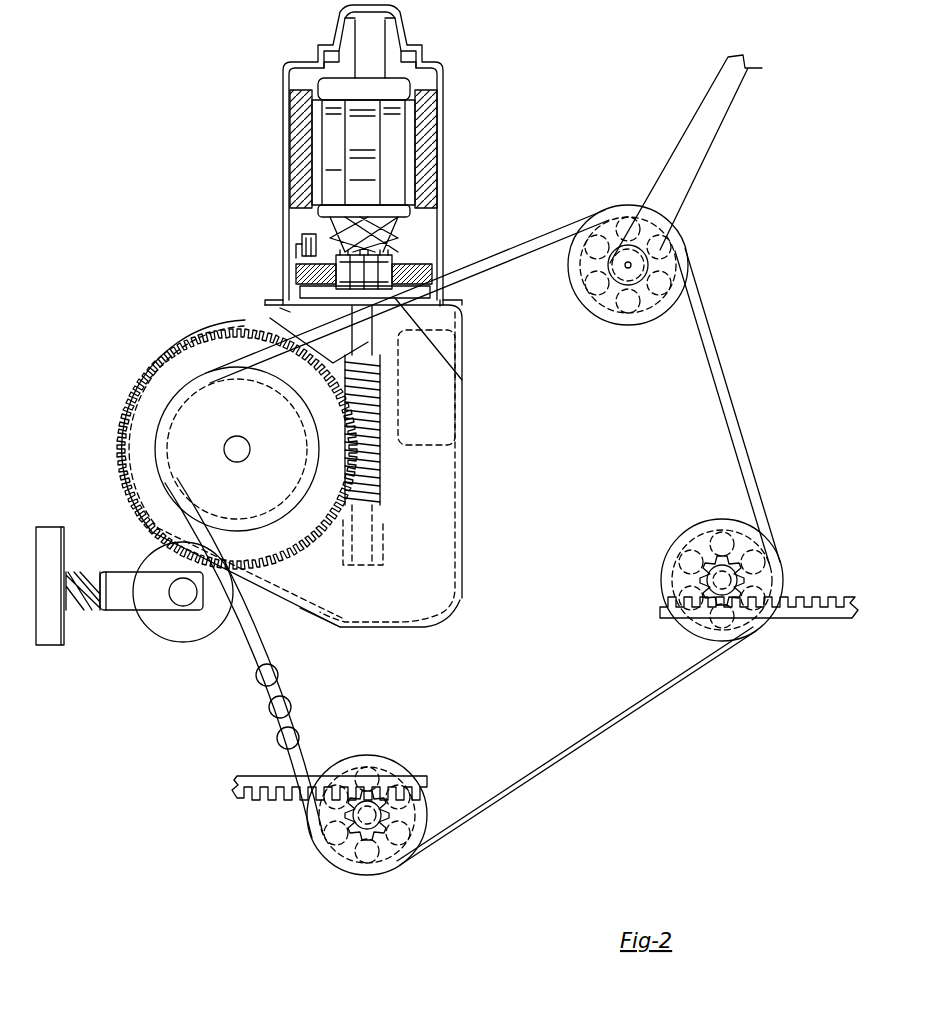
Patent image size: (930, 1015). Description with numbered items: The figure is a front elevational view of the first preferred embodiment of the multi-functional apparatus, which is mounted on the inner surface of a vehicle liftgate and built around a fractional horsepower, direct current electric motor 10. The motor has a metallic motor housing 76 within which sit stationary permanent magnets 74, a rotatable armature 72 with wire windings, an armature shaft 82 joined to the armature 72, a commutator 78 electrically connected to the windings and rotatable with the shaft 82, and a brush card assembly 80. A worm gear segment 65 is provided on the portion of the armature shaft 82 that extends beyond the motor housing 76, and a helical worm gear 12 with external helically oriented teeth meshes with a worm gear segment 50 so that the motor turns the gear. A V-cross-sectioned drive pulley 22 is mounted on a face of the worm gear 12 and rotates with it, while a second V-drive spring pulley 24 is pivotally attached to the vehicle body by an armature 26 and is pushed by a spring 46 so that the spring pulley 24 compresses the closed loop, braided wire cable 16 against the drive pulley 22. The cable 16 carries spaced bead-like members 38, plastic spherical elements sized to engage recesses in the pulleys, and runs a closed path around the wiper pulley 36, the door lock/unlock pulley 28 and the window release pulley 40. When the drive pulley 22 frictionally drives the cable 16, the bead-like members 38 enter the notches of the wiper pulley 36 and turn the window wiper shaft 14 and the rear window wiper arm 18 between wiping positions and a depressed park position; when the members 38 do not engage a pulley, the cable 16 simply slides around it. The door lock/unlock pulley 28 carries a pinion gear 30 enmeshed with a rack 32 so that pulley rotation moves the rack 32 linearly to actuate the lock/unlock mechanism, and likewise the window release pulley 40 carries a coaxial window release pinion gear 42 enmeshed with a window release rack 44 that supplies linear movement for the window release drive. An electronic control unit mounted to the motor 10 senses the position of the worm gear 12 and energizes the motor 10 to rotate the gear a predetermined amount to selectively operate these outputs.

The electric motor 10 is at (270, 180).
The helical worm gear 12 is at (178, 368).
The window wiper shaft 14 is at (635, 268).
The closed loop, braided wire cable 16 is at (535, 242).
The rear window wiper arm 18 is at (700, 196).
The drive pulley 22 is at (193, 430).
The spring pulley 24 is at (180, 630).
The armature 26 is at (120, 600).
The door lock/unlock pulley 28 is at (703, 548).
The pinion gear 30 is at (710, 578).
The rack 32 is at (805, 612).
The wiper pulley 36 is at (618, 304).
The bead-like members 38 is at (278, 707).
The window release pulley 40 is at (390, 838).
The window release pinion gear 42 is at (357, 820).
The window release rack 44 is at (392, 780).
The spring 46 is at (80, 580).
The worm gear segment 50 is at (365, 535).
The worm gear segment 65 is at (187, 338).
The rotatable armature 72 is at (300, 95).
The stationary permanent magnets 74 is at (322, 130).
The metallic motor housing 76 is at (440, 125).
The commutator 78 is at (300, 248).
The brush card assembly 80 is at (400, 282).
The armature shaft 82 is at (372, 332).